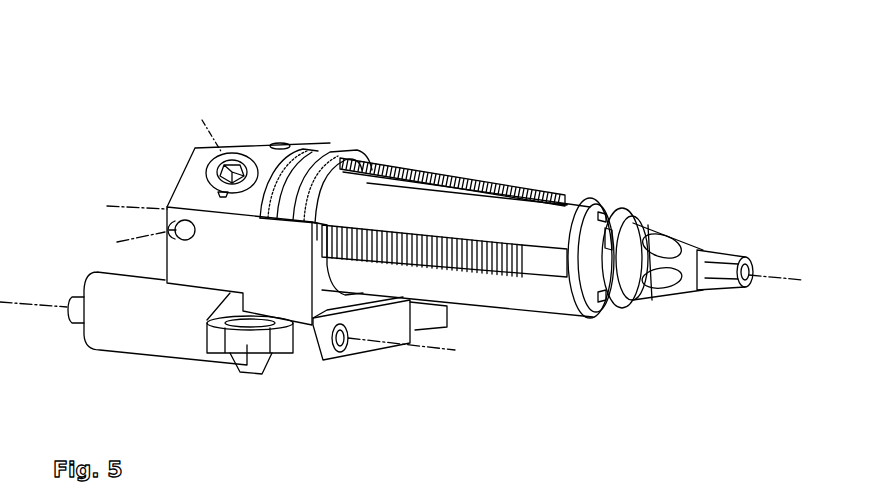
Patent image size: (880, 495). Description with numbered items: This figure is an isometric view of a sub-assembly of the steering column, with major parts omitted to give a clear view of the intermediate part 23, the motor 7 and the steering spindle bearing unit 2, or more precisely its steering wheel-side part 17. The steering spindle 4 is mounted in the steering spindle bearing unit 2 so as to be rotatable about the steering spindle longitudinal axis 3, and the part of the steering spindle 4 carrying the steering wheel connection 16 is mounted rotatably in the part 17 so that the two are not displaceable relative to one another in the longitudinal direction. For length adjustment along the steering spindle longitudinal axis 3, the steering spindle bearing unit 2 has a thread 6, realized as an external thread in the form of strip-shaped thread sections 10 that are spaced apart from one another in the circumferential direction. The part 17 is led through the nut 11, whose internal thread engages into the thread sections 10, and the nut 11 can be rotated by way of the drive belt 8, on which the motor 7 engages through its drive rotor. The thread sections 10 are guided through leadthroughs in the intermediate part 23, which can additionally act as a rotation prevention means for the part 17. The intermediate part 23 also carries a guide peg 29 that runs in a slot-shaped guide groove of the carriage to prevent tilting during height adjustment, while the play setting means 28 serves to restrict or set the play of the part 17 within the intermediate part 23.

The steering spindle bearing unit 2 is at (485, 202).
The steering spindle longitudinal axis 3 is at (763, 268).
The steering spindle 4 is at (647, 213).
The thread 6 is at (444, 239).
The motor 7 is at (165, 340).
The drive belt 8 is at (295, 180).
The thread sections 10 is at (455, 173).
The nut 11 is at (342, 160).
The steering wheel connection 16 is at (713, 260).
The steering wheel-side part 17 is at (558, 213).
The intermediate part 23 is at (285, 287).
The play setting means 28 is at (232, 167).
The guide peg 29 is at (167, 211).